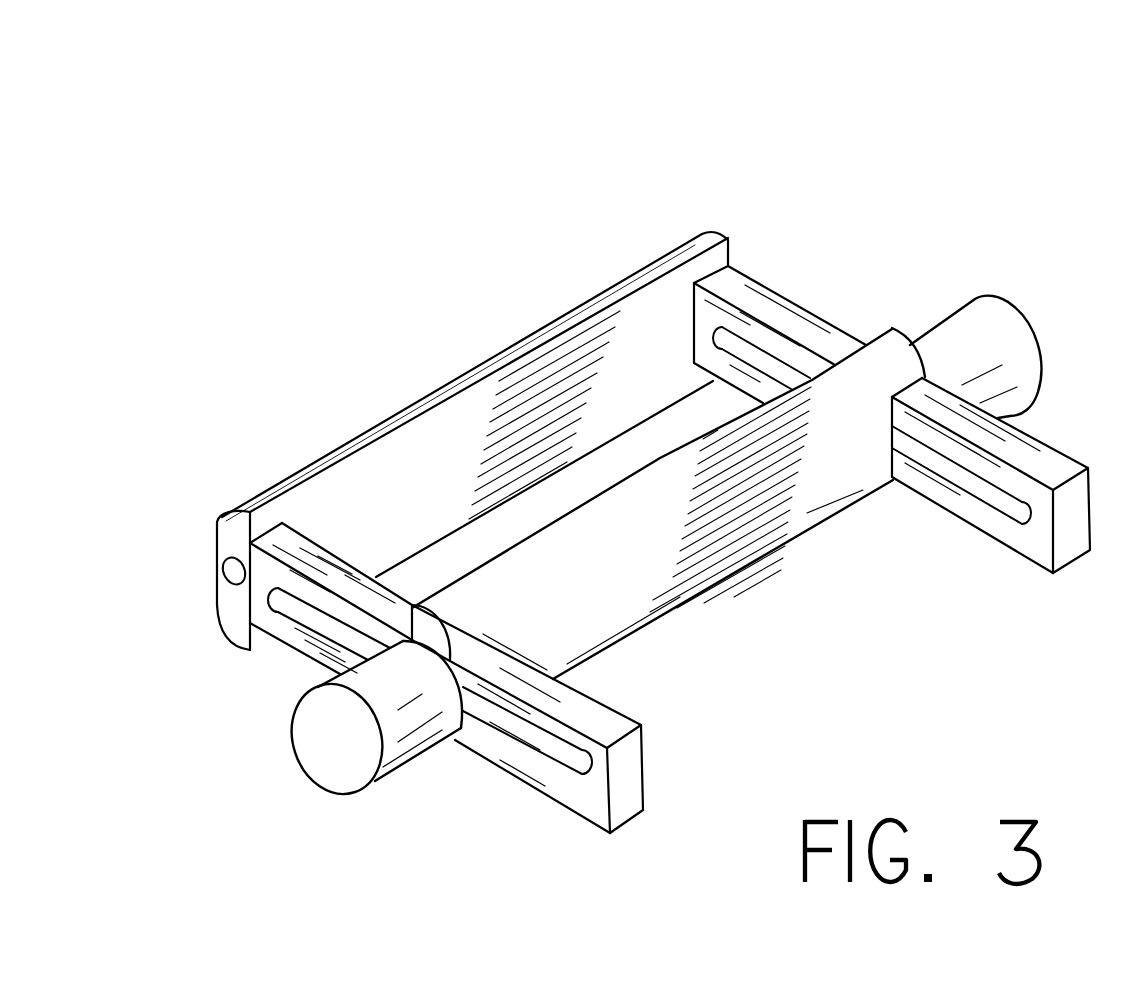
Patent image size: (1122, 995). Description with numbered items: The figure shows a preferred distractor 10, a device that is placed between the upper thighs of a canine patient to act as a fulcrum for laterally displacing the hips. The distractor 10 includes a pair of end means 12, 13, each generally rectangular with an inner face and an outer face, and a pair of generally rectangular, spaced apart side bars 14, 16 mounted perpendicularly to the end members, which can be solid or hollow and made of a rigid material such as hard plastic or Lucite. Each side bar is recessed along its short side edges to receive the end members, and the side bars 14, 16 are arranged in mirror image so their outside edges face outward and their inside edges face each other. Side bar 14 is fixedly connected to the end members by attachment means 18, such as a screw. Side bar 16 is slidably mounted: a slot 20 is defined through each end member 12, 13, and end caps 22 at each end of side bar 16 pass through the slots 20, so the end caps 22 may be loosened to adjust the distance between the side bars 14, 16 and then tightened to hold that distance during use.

The distractor 10 is at (820, 207).
The end means 12 is at (530, 785).
The end means 13 is at (1015, 553).
The side bar 14 is at (372, 425).
The side bar 16 is at (893, 328).
The attachment means 18 is at (217, 552).
The slot 20 is at (307, 645).
The end cap 22 is at (298, 760).